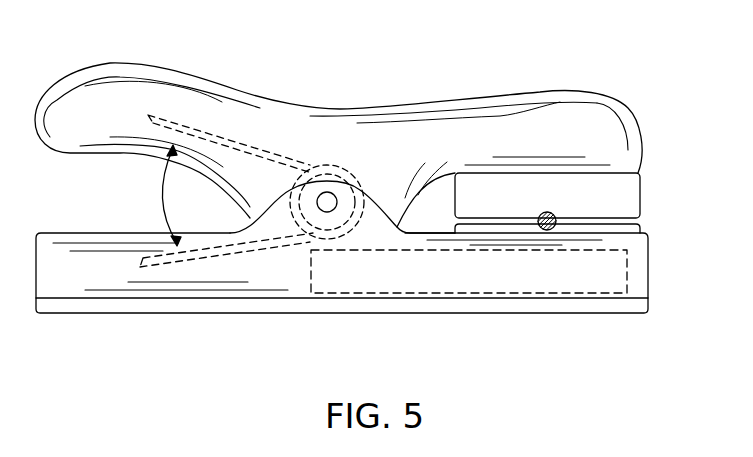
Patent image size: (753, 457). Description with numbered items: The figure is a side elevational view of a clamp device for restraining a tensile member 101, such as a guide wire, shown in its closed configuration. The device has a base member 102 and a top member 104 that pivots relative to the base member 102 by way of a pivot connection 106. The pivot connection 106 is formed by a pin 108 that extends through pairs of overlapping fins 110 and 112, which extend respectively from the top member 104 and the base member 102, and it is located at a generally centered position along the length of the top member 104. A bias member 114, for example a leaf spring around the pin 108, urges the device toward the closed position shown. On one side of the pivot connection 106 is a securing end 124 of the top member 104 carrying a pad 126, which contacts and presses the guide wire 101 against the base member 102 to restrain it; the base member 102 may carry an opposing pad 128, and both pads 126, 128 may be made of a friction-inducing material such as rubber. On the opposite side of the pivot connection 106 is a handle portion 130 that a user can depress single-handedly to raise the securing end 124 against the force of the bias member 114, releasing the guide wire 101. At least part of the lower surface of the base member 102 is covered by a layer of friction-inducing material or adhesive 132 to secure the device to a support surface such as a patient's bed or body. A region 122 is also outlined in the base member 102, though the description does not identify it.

The tensile member 101 is at (557, 222).
The base member 102 is at (80, 287).
The top member 104 is at (473, 117).
The pivot connection 106 is at (391, 188).
The pin 108 is at (327, 192).
The fins 110 is at (240, 207).
The fins 112 is at (379, 192).
The bias member 114 is at (223, 135).
The battery compartment 122 is at (627, 272).
The securing end 124 is at (587, 93).
The pad 126 is at (632, 185).
The pad 128 is at (643, 232).
The handle portion 130 is at (83, 78).
The layer of friction-inducing material or adhesive 132 is at (558, 308).